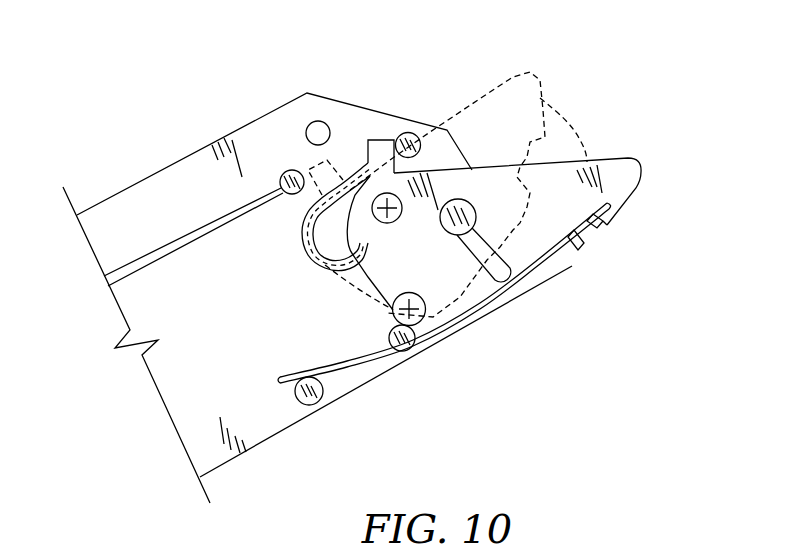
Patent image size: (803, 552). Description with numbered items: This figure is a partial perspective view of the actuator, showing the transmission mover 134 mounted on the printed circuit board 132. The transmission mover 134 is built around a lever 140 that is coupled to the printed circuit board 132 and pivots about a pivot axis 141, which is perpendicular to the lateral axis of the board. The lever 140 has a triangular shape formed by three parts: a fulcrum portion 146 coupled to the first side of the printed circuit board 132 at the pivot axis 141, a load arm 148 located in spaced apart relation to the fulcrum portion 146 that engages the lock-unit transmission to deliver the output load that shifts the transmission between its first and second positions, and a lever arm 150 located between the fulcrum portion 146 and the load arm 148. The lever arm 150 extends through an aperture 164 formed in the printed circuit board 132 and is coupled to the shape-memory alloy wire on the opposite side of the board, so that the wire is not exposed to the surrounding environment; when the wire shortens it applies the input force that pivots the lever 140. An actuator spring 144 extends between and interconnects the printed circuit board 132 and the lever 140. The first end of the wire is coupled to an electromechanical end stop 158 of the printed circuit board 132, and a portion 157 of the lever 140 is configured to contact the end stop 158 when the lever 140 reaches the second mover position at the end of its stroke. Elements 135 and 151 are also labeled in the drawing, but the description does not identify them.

The printed circuit board 132 is at (153, 160).
The electromechanical end stop 158 is at (290, 168).
The portion of the lever 157 is at (380, 135).
The load arm 148 is at (440, 147).
The lever arm 150 is at (495, 160).
The transmission mover 134 is at (583, 125).
The lever 140 is at (640, 165).
The retaining tab 151 is at (507, 227).
The actuator spring 144 is at (518, 298).
The pivot pin 135 is at (444, 258).
The pivot axis 141 is at (425, 328).
The fulcrum portion 146 is at (376, 314).
The aperture 164 is at (313, 250).